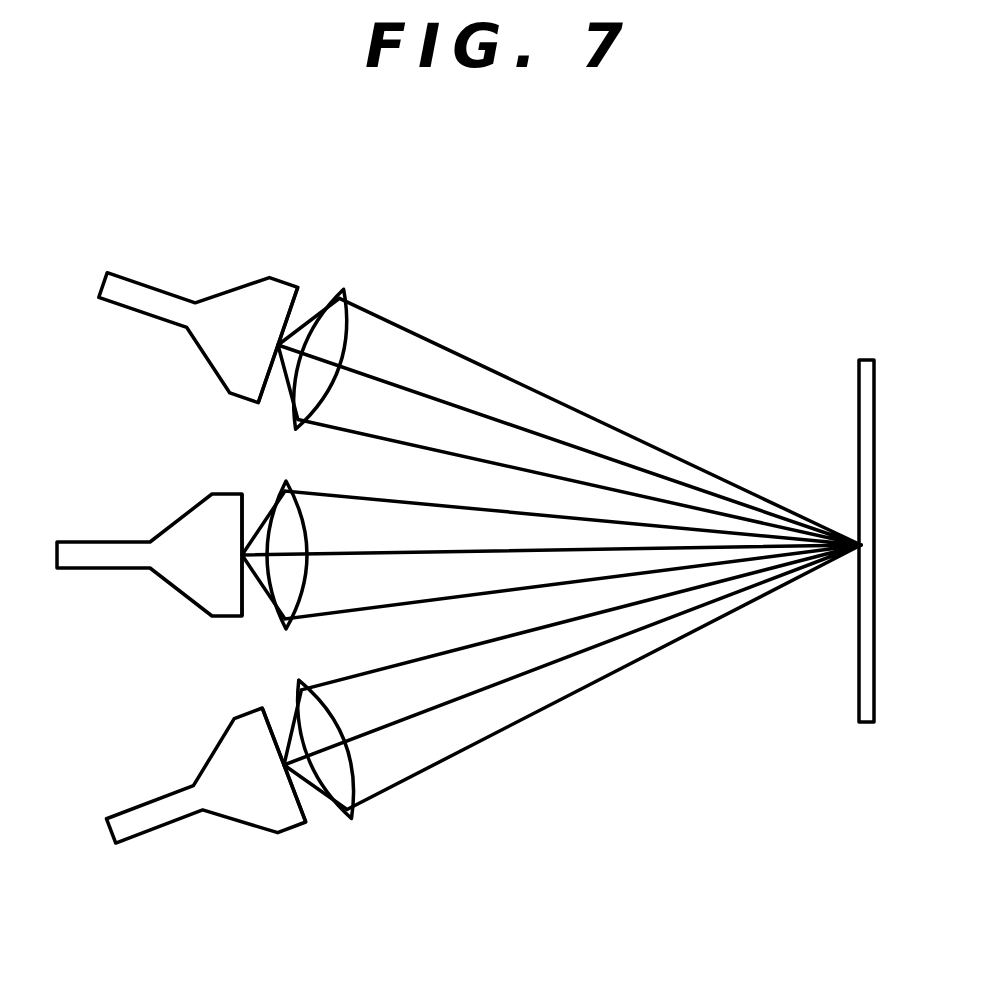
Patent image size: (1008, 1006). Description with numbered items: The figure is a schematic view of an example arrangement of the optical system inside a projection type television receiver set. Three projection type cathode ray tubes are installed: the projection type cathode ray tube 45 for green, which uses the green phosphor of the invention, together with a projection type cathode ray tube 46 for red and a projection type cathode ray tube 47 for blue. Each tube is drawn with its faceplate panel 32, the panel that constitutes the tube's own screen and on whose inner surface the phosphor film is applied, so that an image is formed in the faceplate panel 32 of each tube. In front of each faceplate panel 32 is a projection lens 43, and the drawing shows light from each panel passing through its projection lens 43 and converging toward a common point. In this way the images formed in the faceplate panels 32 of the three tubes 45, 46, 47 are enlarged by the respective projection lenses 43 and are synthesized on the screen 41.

The faceplate panel 32 is at (293, 306).
The screen 41 is at (857, 400).
The projection lens 43 is at (340, 323).
The projection type cathode ray tube for green 45 is at (98, 550).
The projection type cathode ray tube for red 46 is at (160, 300).
The projection type cathode ray tube for blue 47 is at (153, 813).